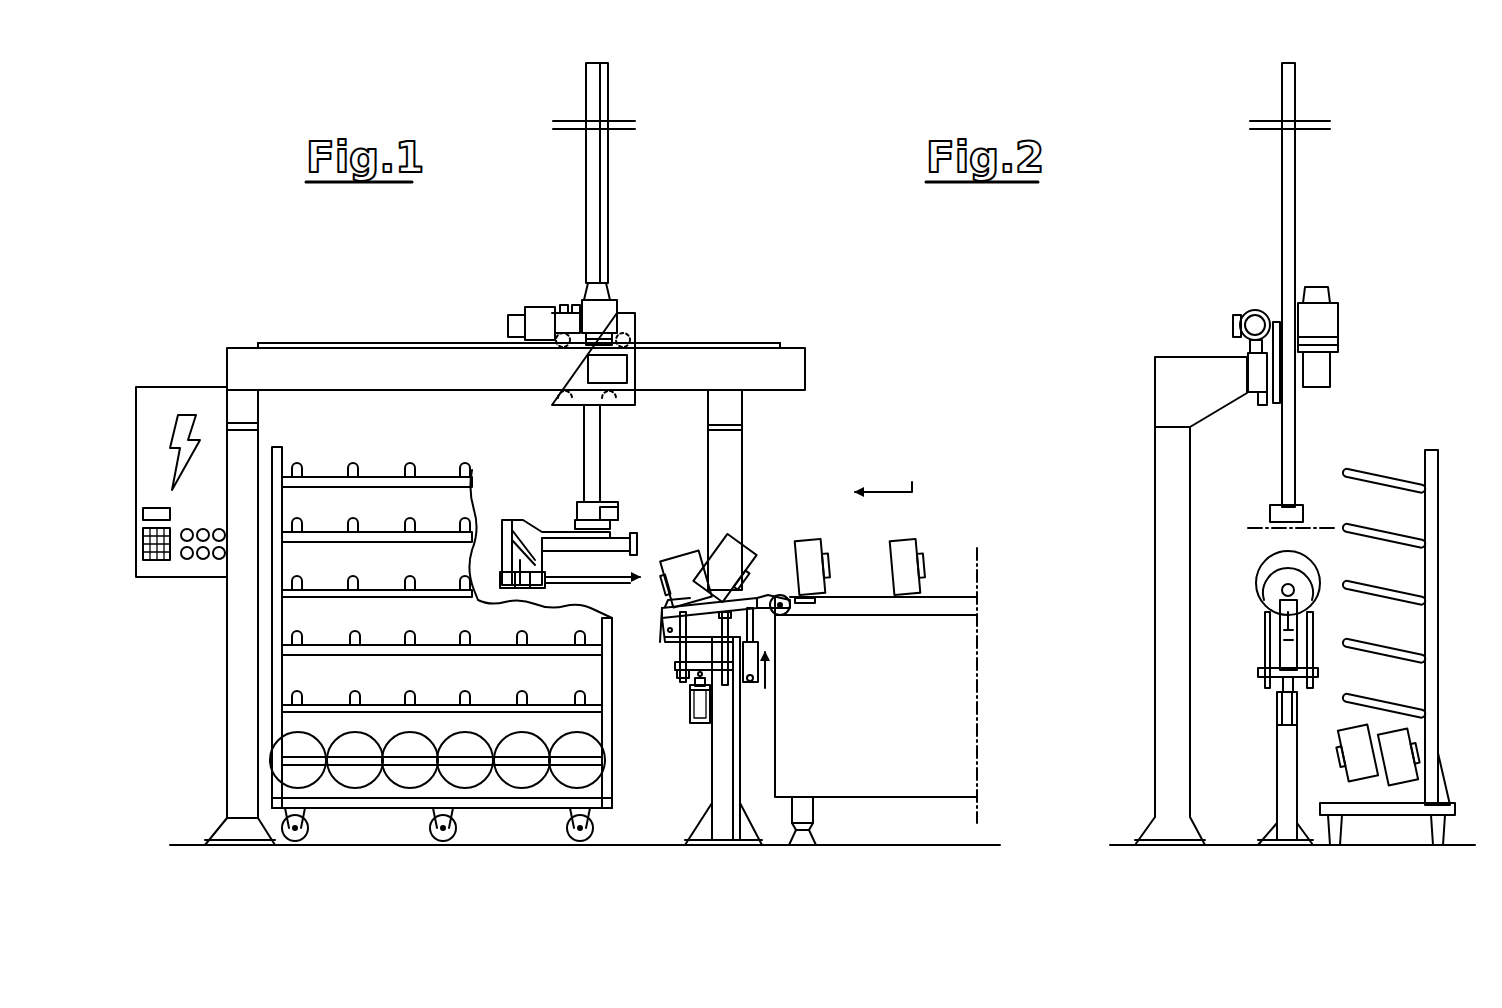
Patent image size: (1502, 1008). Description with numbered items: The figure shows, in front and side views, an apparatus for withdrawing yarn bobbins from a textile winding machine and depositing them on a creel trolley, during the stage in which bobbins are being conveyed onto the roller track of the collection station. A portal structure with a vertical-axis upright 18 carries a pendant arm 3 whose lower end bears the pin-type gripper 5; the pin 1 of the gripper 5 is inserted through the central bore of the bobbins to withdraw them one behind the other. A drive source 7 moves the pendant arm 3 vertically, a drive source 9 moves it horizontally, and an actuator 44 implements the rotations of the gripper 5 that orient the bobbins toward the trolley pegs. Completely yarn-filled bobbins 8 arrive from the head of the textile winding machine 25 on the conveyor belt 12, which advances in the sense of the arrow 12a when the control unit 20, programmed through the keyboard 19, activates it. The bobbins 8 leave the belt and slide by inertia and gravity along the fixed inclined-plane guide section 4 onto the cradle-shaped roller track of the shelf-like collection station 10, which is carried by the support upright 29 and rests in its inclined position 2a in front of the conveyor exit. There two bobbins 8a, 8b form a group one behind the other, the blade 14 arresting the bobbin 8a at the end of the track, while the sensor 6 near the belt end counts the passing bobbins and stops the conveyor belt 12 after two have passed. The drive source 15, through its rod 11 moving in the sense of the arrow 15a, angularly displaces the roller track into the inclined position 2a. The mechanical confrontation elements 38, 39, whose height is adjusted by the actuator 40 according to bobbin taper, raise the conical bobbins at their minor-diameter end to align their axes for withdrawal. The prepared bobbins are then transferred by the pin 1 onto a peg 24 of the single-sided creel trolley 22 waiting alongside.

In FIG. 1, the pin 1 is at (593, 585).
In FIG. 1, the roller track in inclined position 2a is at (676, 687).
In FIG. 1, the pendant arm 3 is at (588, 460).
In FIG. 2, the pendant arm 3 is at (1296, 195).
In FIG. 1, the fixed guide and connection portion 4 is at (764, 592).
In FIG. 1, the pin-type gripper 5 is at (564, 519).
In FIG. 1, the photoelectric sensor 6 is at (792, 600).
In FIG. 1, the drive source 7 is at (612, 315).
In FIG. 2, the drive source 7 is at (1335, 313).
In FIG. 1, the bobbin 8 is at (860, 567).
In FIG. 2, the bobbin 8 is at (1400, 742).
In FIG. 1, the bobbin 8a is at (682, 562).
In FIG. 1, the bobbin 8b is at (735, 555).
In FIG. 1, the drive source 9 is at (533, 308).
In FIG. 2, the drive source 9 is at (1255, 323).
In FIG. 1, the shelf-like collection station 10 is at (670, 640).
In FIG. 1, the rod 11 is at (753, 638).
In FIG. 1, the conveyor belt 12 is at (901, 691).
In FIG. 1, the arrow 12a is at (903, 462).
In FIG. 1, the blade 14 is at (668, 607).
In FIG. 2, the blade 14 is at (1270, 606).
In FIG. 1, the drive source 15 is at (752, 672).
In FIG. 1, the arrow 15a is at (773, 672).
In FIG. 1, the vertical-axis upright 18 is at (230, 735).
In FIG. 2, the vertical-axis upright 18 is at (1160, 592).
In FIG. 1, the keyboard 19 is at (150, 560).
In FIG. 1, the control unit 20 is at (181, 475).
In FIG. 1, the creel trolley 22 is at (288, 452).
In FIG. 2, the creel trolley 22 is at (1399, 625).
In FIG. 2, the peg 24 is at (1383, 468).
In FIG. 1, the head of the textile winding machine 25 is at (962, 680).
In FIG. 1, the support upright 29 is at (728, 830).
In FIG. 2, the support upright 29 is at (1283, 793).
In FIG. 1, the mechanical confrontation element 38 is at (700, 680).
In FIG. 1, the mechanical confrontation element 39 is at (683, 665).
In FIG. 1, the actuator 40 is at (700, 716).
In FIG. 1, the actuator 44 is at (608, 502).